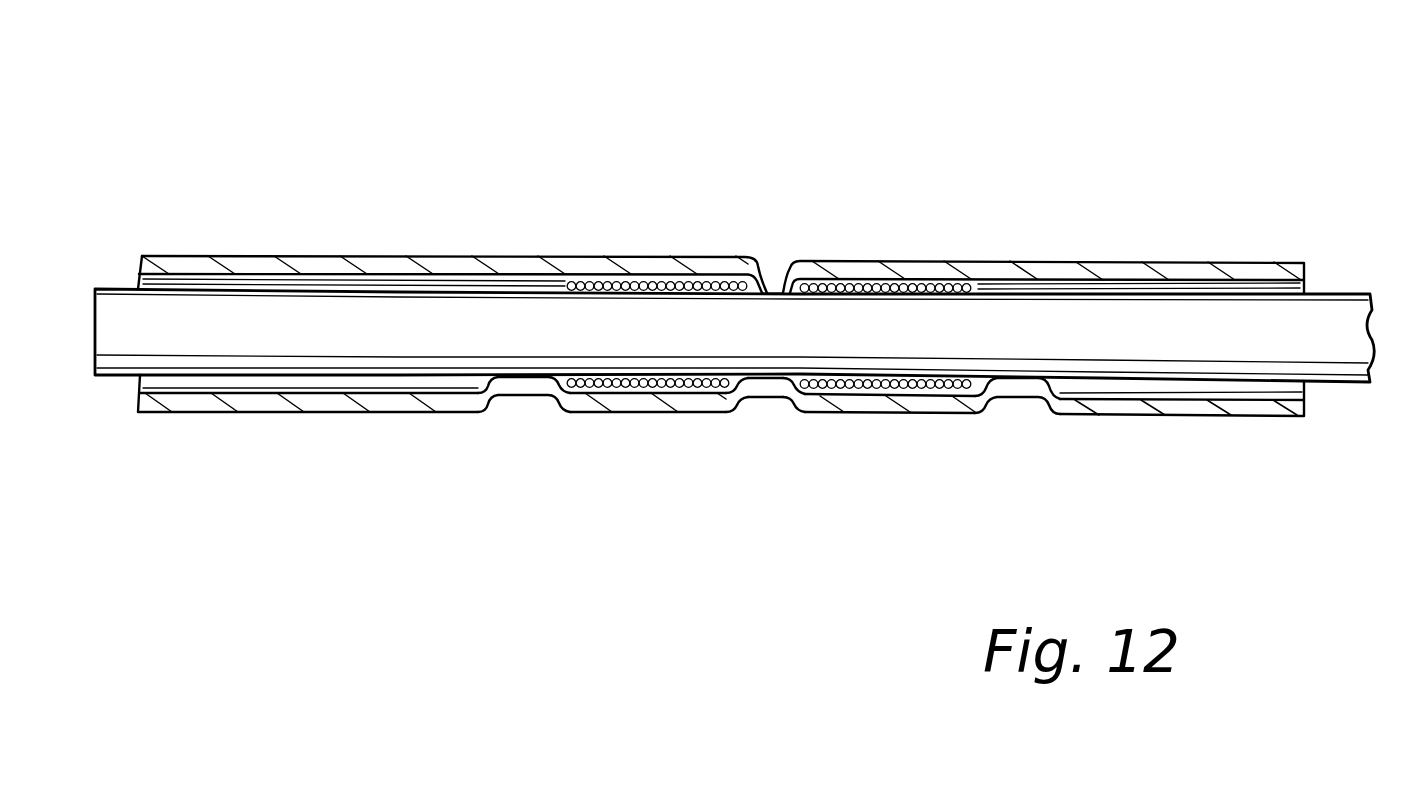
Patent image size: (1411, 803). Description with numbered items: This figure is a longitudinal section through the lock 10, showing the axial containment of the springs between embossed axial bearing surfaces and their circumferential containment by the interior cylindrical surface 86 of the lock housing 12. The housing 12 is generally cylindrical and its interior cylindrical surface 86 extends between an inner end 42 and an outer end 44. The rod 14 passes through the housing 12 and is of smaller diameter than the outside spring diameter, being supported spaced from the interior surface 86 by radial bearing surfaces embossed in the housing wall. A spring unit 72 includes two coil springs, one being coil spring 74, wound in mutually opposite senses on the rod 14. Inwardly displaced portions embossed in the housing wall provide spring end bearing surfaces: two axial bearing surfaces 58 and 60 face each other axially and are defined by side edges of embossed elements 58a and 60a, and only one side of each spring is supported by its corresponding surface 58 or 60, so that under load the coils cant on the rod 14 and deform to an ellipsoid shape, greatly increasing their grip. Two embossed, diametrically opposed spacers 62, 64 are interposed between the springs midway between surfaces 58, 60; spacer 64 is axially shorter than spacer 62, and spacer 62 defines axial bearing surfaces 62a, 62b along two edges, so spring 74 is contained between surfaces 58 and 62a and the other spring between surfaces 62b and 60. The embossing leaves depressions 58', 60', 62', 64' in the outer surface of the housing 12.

The lock 10 is at (949, 145).
The lock housing 12 is at (356, 256).
The rod 14 is at (1328, 293).
The inner end 42 is at (1305, 417).
The outer end 44 is at (140, 400).
The axial bearing surface 58 is at (486, 429).
The depression 58' is at (507, 441).
The embossed element 58a is at (532, 393).
The axial bearing surface 60 is at (1031, 407).
The depression 60' is at (1029, 445).
The embossed element 60a is at (1008, 377).
The spacer 62 is at (769, 448).
The depression 62' is at (759, 447).
The axial bearing surface 62a is at (727, 408).
The axial bearing surface 62b is at (800, 389).
The spacer 64 is at (769, 315).
The depression 64' is at (807, 240).
The spring unit 72 is at (892, 390).
The coil spring 74 is at (636, 384).
The interior cylindrical surface 86 is at (1006, 284).